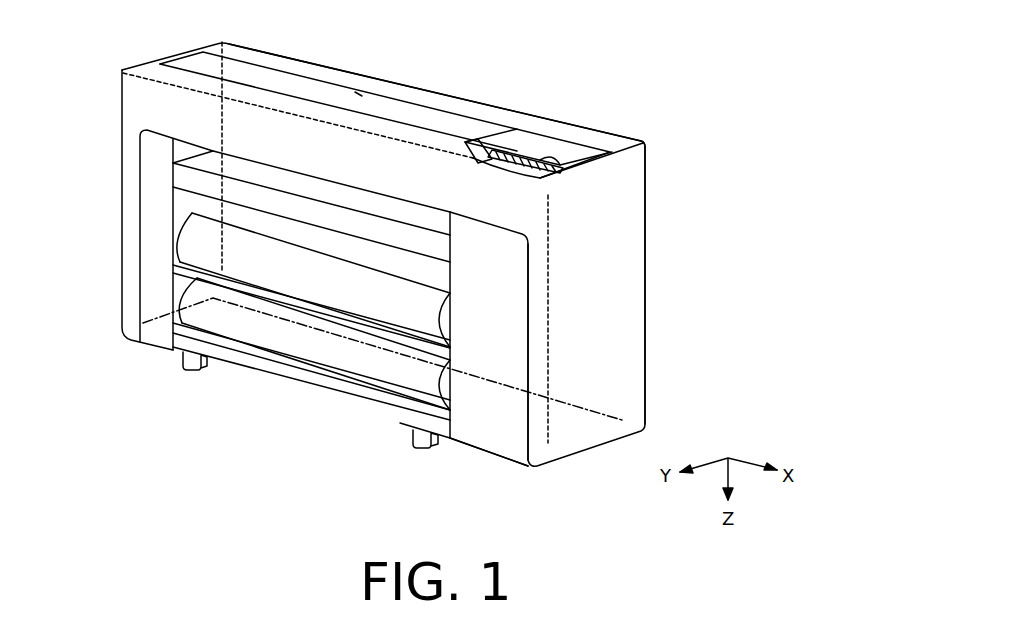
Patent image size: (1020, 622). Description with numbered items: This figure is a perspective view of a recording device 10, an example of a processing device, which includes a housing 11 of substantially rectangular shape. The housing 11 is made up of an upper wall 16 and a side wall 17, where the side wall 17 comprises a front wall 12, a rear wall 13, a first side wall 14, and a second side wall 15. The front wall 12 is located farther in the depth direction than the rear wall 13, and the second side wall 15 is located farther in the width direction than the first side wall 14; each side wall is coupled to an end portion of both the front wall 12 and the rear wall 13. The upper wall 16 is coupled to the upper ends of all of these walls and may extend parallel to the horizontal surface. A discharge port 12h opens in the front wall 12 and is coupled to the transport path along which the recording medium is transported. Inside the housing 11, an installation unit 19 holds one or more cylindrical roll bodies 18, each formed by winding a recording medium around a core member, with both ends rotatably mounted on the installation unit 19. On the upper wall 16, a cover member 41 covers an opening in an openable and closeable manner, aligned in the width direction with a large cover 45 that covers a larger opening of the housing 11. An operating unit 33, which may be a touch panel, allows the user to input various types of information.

The recording device 10 is at (617, 45).
The housing 11 is at (631, 141).
The front wall 12 is at (134, 92).
The discharge port 12h is at (312, 172).
The rear wall 13 is at (646, 208).
The first side wall 14 is at (118, 108).
The second side wall 15 is at (632, 308).
The upper wall 16 is at (463, 100).
The side wall 17 is at (646, 261).
The roll body 18 is at (176, 292).
The installation unit 19 is at (170, 233).
The operating unit 33 is at (556, 168).
The cover member 41 is at (537, 135).
The large cover 45 is at (357, 93).